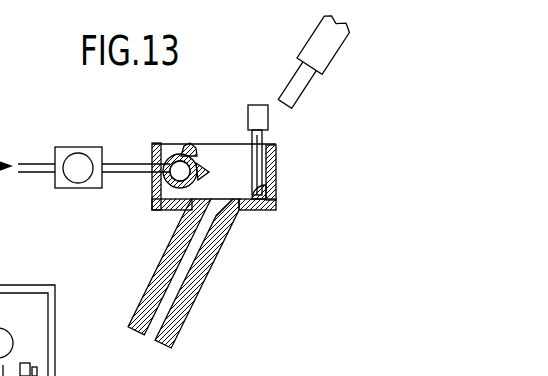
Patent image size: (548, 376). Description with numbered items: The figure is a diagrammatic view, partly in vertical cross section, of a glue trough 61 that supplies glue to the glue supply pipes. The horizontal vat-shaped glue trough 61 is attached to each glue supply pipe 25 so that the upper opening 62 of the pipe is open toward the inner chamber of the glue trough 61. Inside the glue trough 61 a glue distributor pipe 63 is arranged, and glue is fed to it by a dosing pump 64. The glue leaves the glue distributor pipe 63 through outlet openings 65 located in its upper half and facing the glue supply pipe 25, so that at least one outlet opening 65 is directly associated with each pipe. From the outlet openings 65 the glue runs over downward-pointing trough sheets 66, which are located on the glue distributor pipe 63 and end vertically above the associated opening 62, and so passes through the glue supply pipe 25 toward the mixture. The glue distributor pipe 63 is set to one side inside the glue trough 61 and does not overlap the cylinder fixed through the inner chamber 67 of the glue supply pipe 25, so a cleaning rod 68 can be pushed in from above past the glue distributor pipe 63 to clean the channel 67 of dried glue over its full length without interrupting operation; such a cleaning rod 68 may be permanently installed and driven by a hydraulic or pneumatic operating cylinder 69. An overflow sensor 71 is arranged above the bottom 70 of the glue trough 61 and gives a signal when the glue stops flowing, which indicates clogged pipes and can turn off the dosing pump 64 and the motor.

The glue trough 61 is at (270, 165).
The upper opening 62 is at (216, 212).
The glue distributor pipe 63 is at (173, 160).
The dosing pump 64 is at (78, 153).
The outlet opening 65 is at (200, 162).
The trough sheet 66 is at (187, 146).
The inner chamber 67 is at (165, 302).
The cleaning rod 68 is at (295, 88).
The operating cylinder 69 is at (317, 43).
The bottom 70 is at (270, 194).
The overflow sensor 71 is at (258, 138).
The glue supply pipe 25 is at (208, 278).